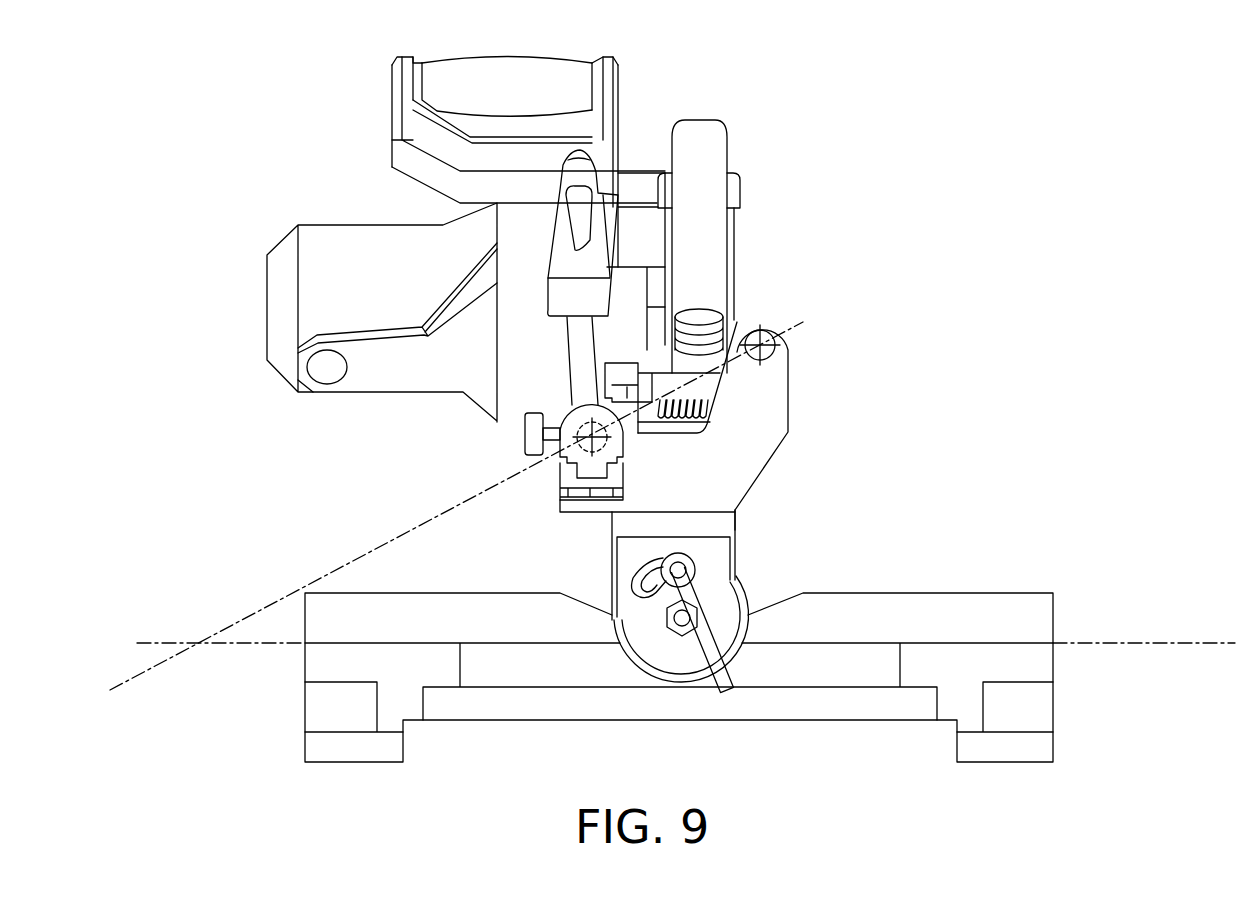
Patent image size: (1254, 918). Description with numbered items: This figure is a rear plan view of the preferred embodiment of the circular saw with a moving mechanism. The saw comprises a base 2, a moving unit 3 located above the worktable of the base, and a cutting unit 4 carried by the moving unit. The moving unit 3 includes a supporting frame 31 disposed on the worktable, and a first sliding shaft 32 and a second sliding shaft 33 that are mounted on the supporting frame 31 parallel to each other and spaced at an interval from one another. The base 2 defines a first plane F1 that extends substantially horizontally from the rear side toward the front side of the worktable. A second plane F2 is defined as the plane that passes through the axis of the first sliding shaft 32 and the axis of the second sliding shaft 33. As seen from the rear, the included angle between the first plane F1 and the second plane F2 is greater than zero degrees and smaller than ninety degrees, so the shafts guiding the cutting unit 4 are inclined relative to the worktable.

The base 2 is at (823, 748).
The moving unit 3 is at (640, 325).
The cutting unit 4 is at (484, 38).
The supporting frame 31 is at (777, 405).
The first sliding shaft 32 is at (768, 330).
The second sliding shaft 33 is at (570, 418).
The first plane F1 is at (669, 647).
The second plane F2 is at (437, 516).